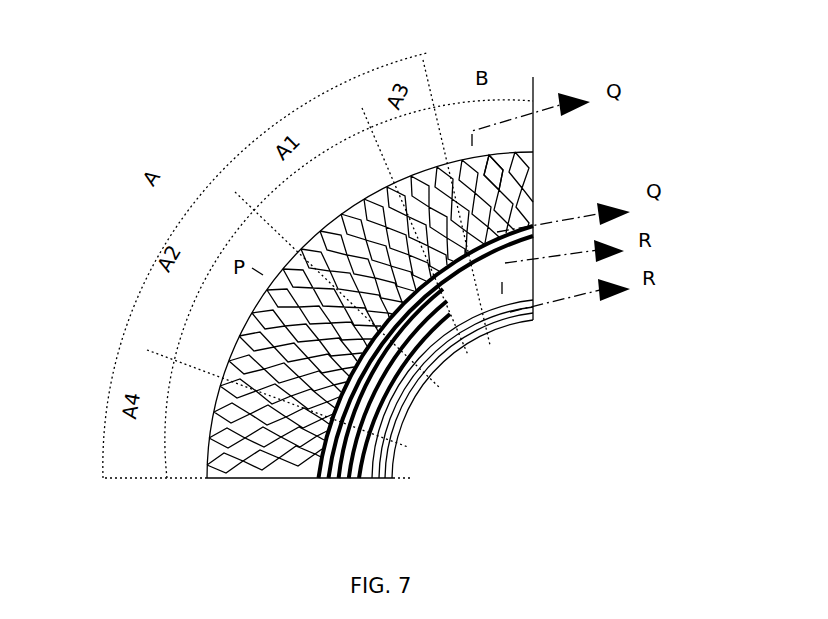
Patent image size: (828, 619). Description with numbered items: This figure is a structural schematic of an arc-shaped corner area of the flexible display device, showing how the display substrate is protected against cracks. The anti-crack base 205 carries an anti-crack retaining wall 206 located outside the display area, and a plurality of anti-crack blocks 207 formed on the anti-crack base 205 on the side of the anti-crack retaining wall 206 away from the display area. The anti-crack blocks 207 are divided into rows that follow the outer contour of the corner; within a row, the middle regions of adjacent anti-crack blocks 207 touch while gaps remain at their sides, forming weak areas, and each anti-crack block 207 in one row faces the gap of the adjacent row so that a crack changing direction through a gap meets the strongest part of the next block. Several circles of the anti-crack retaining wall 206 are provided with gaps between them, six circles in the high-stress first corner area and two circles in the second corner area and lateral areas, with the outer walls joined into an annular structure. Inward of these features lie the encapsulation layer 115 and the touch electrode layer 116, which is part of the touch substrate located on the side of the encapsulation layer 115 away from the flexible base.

The anti-crack base 205 is at (243, 480).
The anti-crack retaining wall 206 is at (319, 478).
The anti-crack block 207 is at (508, 178).
The encapsulation layer 115 is at (392, 403).
The touch electrode layer 116 is at (380, 462).